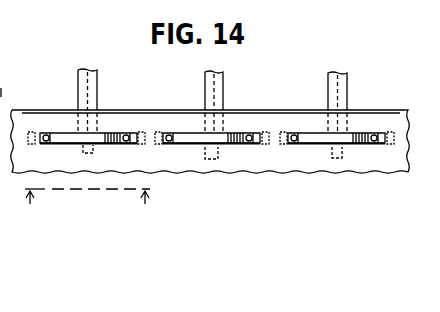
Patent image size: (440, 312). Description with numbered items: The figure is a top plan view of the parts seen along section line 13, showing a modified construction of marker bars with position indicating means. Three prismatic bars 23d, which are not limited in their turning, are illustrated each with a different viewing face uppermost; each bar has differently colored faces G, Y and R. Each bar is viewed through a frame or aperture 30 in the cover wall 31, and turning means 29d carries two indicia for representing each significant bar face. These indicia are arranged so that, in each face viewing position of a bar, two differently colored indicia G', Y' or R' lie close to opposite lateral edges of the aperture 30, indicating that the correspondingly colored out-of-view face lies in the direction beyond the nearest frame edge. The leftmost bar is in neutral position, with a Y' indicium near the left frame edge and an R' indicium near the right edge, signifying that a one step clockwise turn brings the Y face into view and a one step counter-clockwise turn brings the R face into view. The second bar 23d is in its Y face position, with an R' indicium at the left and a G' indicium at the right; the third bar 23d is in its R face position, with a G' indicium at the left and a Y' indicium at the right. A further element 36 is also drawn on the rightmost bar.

The section line 13 is at (89, 200).
The prismatic bar 23d is at (205, 107).
The turning means 29d is at (92, 148).
The aperture 30 is at (212, 157).
The cover wall 31 is at (263, 121).
The connecting curve 36 is at (297, 139).
The G face G is at (212, 75).
The Y face Y is at (211, 93).
The R face R is at (223, 90).
The G' indicium G' is at (201, 143).
The Y' indicium Y' is at (211, 144).
The R' indicium R' is at (216, 141).